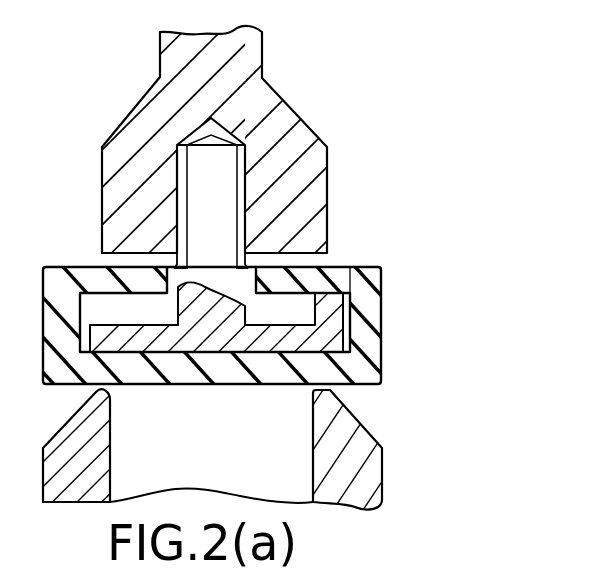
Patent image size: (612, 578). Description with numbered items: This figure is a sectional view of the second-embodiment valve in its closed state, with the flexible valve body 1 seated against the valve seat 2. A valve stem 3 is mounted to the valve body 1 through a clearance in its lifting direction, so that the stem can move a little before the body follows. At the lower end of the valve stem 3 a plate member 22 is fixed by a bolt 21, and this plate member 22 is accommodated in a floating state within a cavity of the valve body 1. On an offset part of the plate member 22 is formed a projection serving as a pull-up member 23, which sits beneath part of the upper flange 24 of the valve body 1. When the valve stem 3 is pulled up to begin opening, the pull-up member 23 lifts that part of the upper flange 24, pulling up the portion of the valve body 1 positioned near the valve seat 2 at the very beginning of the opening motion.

The valve body 1 is at (375, 342).
The valve seat 2 is at (363, 437).
The valve stem 3 is at (262, 50).
The bolt 21 is at (233, 197).
The plate member 22 is at (157, 343).
The pull-up member 23 is at (330, 308).
The upper flange 24 is at (328, 268).